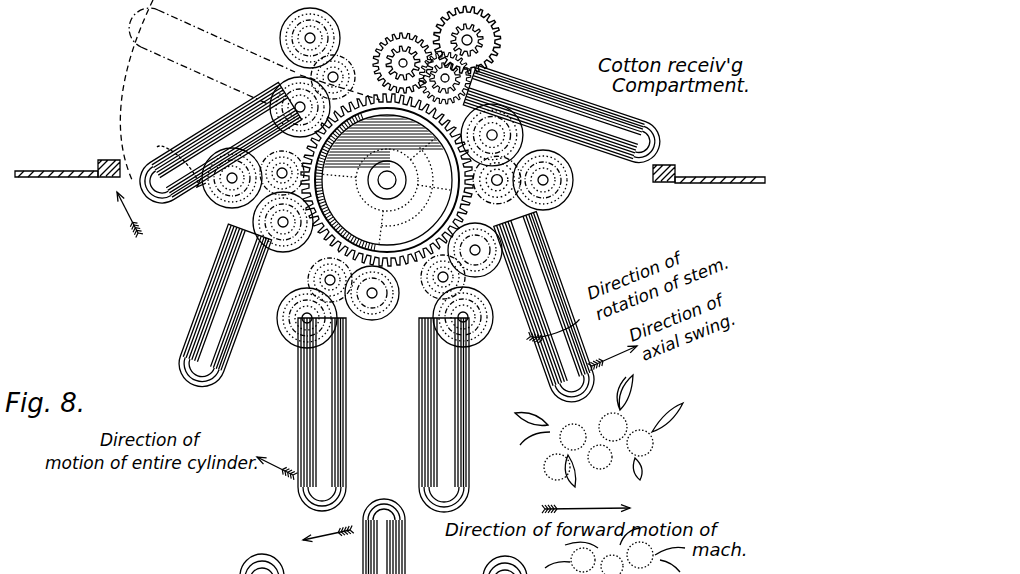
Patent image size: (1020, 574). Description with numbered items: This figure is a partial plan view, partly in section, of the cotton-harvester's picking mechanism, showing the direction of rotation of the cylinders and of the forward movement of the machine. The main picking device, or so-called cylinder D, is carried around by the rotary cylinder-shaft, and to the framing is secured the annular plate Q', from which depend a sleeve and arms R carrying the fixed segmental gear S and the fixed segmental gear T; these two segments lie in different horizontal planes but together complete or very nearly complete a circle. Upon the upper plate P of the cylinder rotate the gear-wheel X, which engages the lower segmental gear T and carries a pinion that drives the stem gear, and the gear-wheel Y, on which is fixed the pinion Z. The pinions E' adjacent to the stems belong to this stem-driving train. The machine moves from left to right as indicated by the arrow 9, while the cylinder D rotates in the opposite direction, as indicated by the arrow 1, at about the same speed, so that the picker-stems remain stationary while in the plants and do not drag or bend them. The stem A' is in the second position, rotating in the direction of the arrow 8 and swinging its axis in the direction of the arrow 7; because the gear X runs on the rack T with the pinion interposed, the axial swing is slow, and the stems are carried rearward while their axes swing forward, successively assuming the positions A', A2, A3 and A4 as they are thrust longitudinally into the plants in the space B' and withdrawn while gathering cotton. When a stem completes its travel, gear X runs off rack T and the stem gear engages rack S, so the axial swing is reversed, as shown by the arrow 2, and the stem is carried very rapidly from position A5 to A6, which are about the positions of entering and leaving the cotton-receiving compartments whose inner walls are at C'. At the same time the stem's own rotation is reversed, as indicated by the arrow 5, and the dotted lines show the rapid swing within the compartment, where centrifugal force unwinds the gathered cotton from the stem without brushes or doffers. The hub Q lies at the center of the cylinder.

The arrow indicating direction of motion of entire cylinder 1 is at (275, 460).
The arrow indicating reversed direction of axial swing 2 is at (118, 212).
The arrow indicating reversed direction of stem rotation 5 is at (177, 181).
The arrow indicating direction of axial swing 7 is at (613, 352).
The arrow indicating direction of rotation of stem 8 is at (556, 318).
The arrow indicating direction of forward motion of machine 9 is at (587, 501).
The picker-stem A' is at (547, 310).
The picker-stem A2 is at (458, 415).
The picker-stem A3 is at (337, 414).
The picker-stem A4 is at (222, 308).
The picker-stem A5 is at (217, 146).
The picker-stem A6 is at (564, 116).
The space for plants B' is at (600, 474).
The inner walls of cotton-receiving compartments C' is at (396, 162).
The main picking device or cylinder D is at (390, 194).
The stem rotating pinion E' is at (390, 178).
The upper plate P is at (387, 178).
The central hub Q is at (387, 180).
The annular plate Q' is at (387, 180).
The arms R is at (386, 191).
The fixed segmental gear S is at (387, 174).
The fixed segmental gear T is at (387, 180).
The gear-wheel X is at (403, 61).
The gear-wheel Y is at (467, 39).
The pinion Z is at (450, 64).